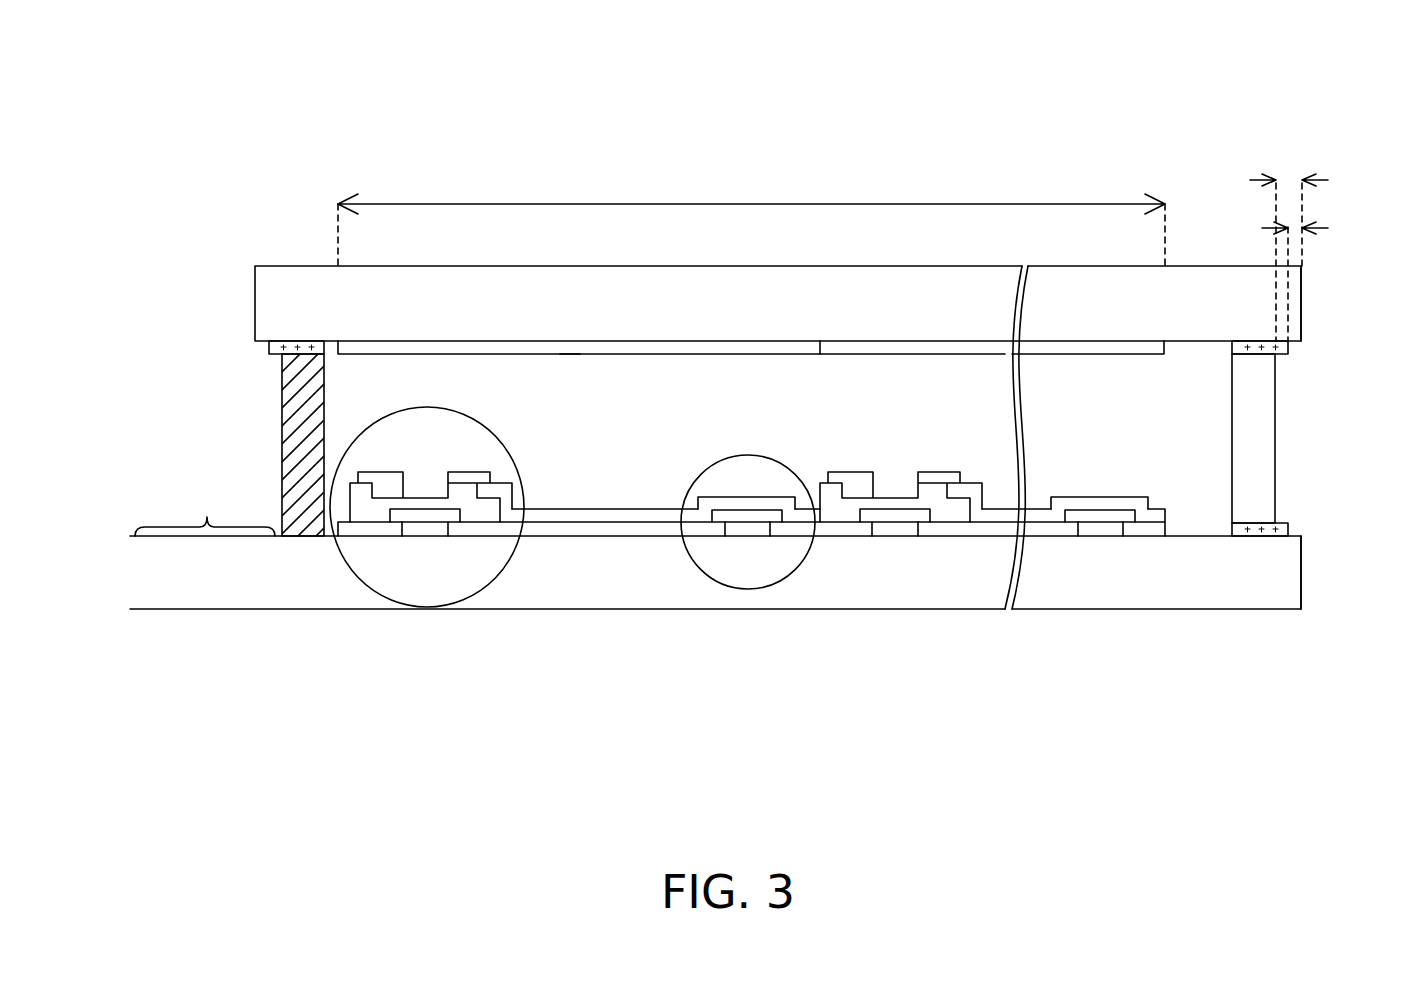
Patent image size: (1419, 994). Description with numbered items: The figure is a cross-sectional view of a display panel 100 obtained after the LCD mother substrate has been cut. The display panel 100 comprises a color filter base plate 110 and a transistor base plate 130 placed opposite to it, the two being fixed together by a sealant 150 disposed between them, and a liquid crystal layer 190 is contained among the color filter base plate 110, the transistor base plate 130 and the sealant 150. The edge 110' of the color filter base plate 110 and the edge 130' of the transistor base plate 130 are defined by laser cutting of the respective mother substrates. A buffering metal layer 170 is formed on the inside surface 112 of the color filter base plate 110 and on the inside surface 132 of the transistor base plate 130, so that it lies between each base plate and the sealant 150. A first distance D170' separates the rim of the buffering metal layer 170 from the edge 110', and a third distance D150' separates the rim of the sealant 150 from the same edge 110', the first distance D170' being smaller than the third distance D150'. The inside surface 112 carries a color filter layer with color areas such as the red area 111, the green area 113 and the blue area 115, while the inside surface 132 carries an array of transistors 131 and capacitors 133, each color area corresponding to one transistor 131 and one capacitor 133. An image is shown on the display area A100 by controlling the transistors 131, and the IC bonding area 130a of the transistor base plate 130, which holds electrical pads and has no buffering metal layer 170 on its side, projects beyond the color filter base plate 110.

The display panel 100 is at (1273, 70).
The color filter base plate 110 is at (734, 437).
The edge of the color filter base plate 110' is at (1352, 295).
The red area 111 is at (757, 348).
The inside surface of the color filter base plate 112 is at (565, 356).
The green area 113 is at (890, 351).
The blue area 115 is at (1104, 349).
The transistor base plate 130 is at (678, 532).
The IC bonding area 130a is at (205, 505).
The edge of the transistor base plate 130' is at (1350, 617).
The transistor 131 is at (423, 608).
The inside surface of the transistor base plate 132 is at (561, 524).
The capacitor 133 is at (750, 590).
The sealant 150 is at (282, 405).
The buffering metal layer 170 is at (270, 347).
The liquid crystal layer 190 is at (1217, 450).
The display area A100 is at (751, 216).
The third distance D150' is at (1290, 240).
The first distance D170' is at (1339, 267).